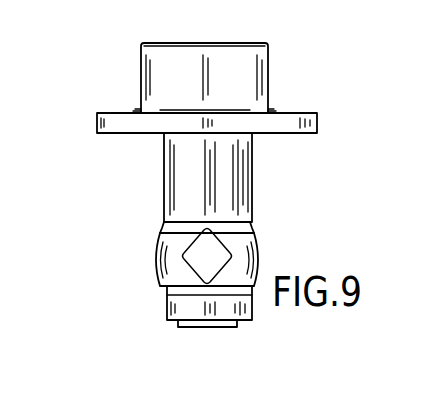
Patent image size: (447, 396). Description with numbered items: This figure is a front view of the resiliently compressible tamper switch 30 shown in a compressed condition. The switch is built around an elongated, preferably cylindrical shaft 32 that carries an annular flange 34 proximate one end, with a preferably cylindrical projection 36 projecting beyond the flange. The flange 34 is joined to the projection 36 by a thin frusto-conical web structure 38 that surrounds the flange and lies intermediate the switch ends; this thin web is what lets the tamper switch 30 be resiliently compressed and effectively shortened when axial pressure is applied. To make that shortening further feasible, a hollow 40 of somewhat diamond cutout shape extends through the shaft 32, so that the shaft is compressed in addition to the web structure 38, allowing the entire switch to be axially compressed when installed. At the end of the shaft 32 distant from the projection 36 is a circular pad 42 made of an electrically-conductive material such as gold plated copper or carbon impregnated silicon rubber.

The tamper switch 30 is at (263, 205).
The shaft 32 is at (165, 192).
The annular flange 34 is at (316, 114).
The cylindrical projection 36 is at (270, 58).
The frusto-conical web structure 38 is at (203, 112).
The hollow 40 is at (190, 261).
The circular pad 42 is at (195, 323).